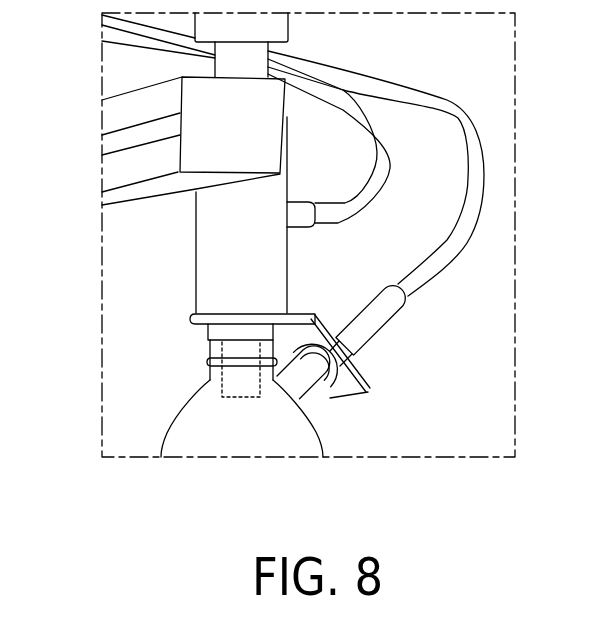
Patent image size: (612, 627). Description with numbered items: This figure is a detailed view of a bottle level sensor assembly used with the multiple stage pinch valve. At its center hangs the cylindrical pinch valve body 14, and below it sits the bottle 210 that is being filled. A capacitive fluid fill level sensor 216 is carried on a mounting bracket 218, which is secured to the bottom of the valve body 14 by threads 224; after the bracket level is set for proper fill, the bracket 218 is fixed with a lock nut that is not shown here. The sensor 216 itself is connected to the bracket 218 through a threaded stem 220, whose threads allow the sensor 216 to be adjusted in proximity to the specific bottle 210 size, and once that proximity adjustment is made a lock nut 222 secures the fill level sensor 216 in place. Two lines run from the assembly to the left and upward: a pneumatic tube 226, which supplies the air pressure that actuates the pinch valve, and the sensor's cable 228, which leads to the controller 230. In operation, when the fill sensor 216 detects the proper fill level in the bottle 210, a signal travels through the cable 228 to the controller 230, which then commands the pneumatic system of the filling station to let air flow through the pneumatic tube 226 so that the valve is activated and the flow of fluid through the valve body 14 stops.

The pinch valve body 14 is at (208, 262).
The bottle 210 is at (293, 447).
The capacitive fluid fill level sensor 216 is at (307, 384).
The mounting bracket 218 is at (318, 312).
The threaded stem 220 is at (350, 362).
The lock nut 222 is at (345, 347).
The threads 224 is at (208, 332).
The pneumatic tube 226 is at (362, 195).
The cable 228 is at (449, 113).
The controller 230 is at (113, 117).